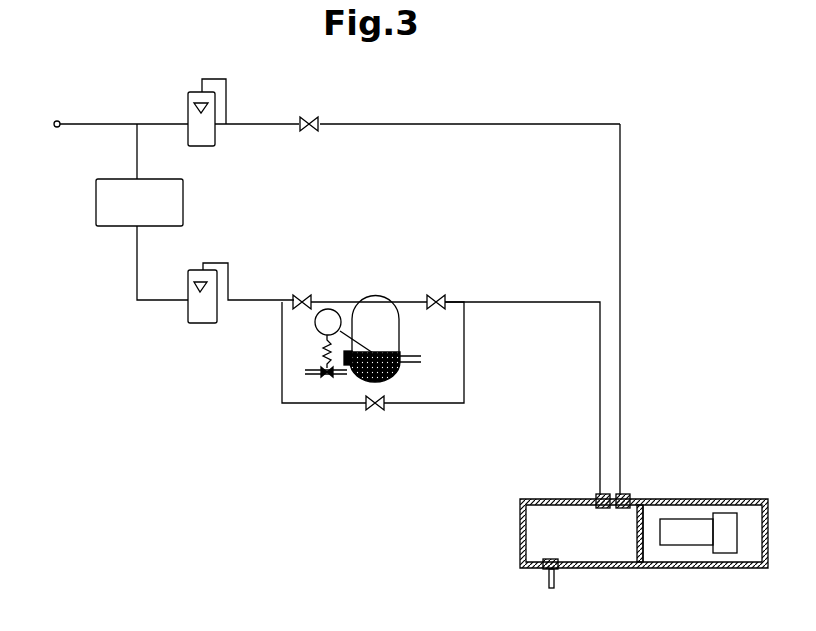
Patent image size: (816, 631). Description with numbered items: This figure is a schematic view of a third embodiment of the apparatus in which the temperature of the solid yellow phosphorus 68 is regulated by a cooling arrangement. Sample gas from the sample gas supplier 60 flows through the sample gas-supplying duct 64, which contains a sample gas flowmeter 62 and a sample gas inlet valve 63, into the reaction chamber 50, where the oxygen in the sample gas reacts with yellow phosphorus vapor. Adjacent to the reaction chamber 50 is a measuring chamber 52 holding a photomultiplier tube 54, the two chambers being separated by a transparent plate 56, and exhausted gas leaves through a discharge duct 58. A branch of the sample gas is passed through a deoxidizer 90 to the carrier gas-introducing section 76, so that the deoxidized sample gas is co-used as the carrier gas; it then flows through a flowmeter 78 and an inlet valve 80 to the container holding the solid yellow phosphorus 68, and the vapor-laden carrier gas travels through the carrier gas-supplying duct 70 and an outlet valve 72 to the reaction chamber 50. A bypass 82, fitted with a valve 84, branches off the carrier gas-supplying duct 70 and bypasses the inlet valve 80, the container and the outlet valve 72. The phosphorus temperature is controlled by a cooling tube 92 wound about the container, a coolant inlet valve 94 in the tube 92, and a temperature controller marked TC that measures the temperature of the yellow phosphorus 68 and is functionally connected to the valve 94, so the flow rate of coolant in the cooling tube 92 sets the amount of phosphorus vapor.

The reaction chamber 50 is at (563, 516).
The measuring chamber 52 is at (748, 552).
The photomultiplier tube 54 is at (693, 525).
The transparent plate 56 is at (637, 545).
The discharge duct 58 is at (543, 577).
The sample gas supplier 60 is at (57, 121).
The sample gas flowmeter 62 is at (188, 96).
The sample gas inlet valve 63 is at (309, 118).
The sample gas-supplying duct 64 is at (620, 250).
The solid yellow phosphorus 68 is at (393, 345).
The carrier gas-supplying duct 70 is at (562, 300).
The outlet valve 72 is at (437, 296).
The carrier gas-introducing section 76 is at (139, 228).
The flowmeter 78 is at (190, 317).
The inlet valve 80 is at (300, 295).
The bypass 82 is at (464, 352).
The valve 84 is at (378, 411).
The deoxidizer 90 is at (183, 198).
The cooling tube 92 is at (403, 367).
The coolant inlet valve 94 is at (322, 380).